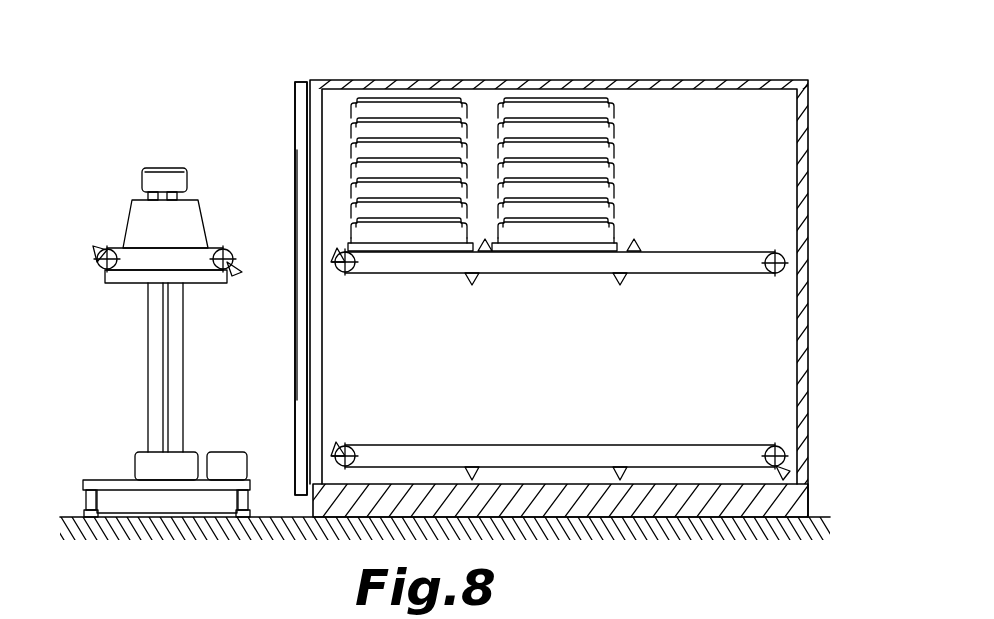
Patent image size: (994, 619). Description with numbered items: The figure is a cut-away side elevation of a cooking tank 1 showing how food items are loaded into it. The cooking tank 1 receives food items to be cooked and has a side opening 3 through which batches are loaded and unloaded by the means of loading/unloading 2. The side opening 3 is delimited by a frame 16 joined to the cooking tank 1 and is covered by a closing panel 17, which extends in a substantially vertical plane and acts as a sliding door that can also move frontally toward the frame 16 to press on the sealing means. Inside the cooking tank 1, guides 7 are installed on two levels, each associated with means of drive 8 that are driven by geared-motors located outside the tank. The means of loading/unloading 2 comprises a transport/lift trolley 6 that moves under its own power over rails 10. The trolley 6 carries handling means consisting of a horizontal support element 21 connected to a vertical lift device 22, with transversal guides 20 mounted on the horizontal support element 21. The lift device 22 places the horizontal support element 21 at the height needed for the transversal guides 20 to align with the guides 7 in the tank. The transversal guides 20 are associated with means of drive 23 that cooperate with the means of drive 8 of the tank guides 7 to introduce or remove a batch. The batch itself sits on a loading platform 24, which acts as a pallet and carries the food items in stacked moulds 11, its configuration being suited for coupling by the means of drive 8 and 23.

The cooking tank 1 is at (706, 105).
The means of loading/unloading 2 is at (150, 370).
The side opening 3 is at (283, 144).
The transport/lift trolley 6 is at (110, 487).
The guides 7 is at (720, 272).
The means of drive 8 is at (645, 250).
The rails 10 is at (240, 515).
The stacked moulds 11 is at (565, 107).
The frame 16 is at (303, 80).
The closing panel 17 is at (297, 365).
The transversal guides 20 is at (188, 250).
The horizontal support element 21 is at (124, 283).
The vertical lift device 22 is at (152, 385).
The means of drive 23 is at (105, 247).
The loading platform 24 is at (580, 243).